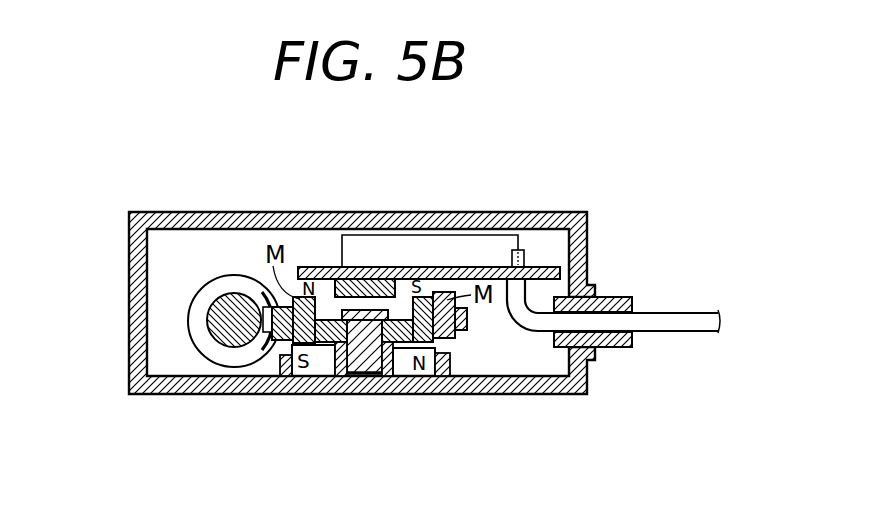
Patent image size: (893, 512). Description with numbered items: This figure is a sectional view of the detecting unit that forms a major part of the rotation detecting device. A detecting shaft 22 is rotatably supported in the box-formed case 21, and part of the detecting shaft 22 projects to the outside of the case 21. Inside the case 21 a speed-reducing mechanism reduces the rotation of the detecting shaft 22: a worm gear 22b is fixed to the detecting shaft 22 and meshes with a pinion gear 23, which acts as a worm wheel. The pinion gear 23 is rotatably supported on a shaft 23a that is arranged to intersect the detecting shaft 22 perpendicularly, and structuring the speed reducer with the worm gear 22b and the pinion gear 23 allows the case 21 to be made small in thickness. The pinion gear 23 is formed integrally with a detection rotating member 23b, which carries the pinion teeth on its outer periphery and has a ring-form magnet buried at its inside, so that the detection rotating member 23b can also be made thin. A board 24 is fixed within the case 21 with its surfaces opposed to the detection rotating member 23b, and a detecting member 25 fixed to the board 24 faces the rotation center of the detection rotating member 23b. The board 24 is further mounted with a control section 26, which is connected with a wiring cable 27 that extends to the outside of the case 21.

The case 21 is at (470, 222).
The detecting shaft 22 is at (232, 337).
The worm gear 22b is at (205, 344).
The pinion gear 23 is at (467, 322).
The shaft 23a is at (363, 348).
The detection rotating member 23b is at (450, 342).
The board 24 is at (313, 267).
The detecting member 25 is at (362, 285).
The control section 26 is at (420, 247).
The wiring cable 27 is at (673, 313).